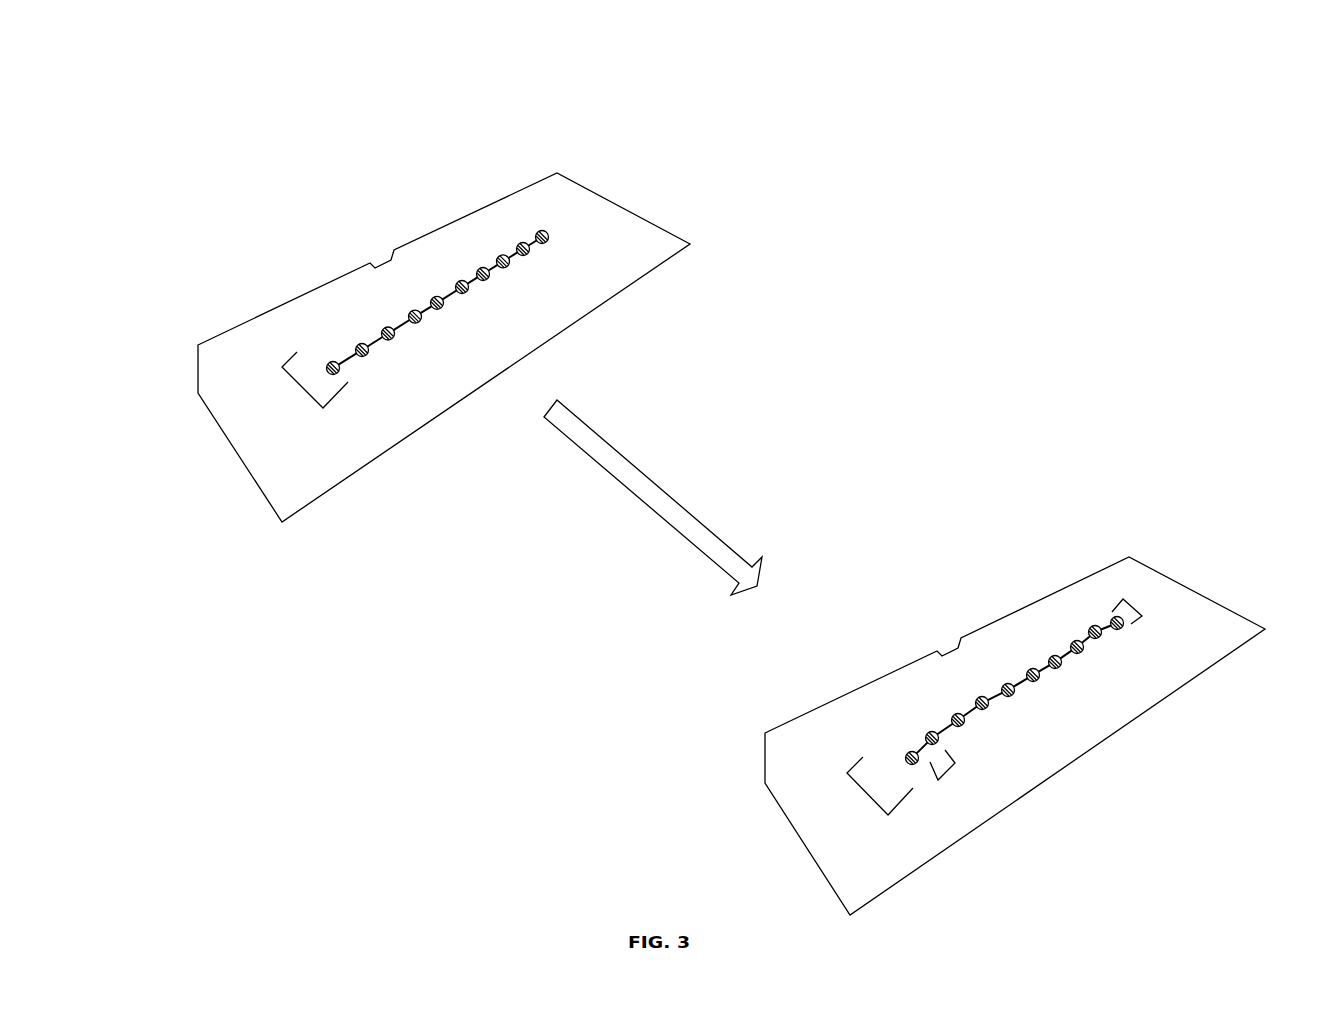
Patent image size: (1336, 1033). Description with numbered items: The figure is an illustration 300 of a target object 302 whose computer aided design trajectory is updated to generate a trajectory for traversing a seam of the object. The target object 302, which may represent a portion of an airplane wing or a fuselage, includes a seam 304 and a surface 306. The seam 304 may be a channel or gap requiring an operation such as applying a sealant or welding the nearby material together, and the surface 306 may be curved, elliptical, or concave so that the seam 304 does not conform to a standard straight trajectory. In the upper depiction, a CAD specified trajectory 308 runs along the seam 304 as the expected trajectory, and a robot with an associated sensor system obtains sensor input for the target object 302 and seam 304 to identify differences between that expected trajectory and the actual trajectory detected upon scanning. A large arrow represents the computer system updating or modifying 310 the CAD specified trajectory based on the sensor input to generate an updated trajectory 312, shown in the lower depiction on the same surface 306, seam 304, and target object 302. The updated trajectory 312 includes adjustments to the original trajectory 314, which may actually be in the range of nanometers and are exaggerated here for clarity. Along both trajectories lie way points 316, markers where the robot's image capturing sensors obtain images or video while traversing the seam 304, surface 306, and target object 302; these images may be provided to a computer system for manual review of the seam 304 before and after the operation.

The trajectory update process 300 is at (171, 60).
The target object 302 is at (477, 210).
The seam 304 is at (863, 793).
The surface 306 is at (255, 378).
The CAD specified trajectory 308 is at (427, 263).
The update or modify 310 is at (630, 590).
The updated trajectory 312 is at (1023, 561).
The adjustments to the original trajectory 314 is at (945, 773).
The way points 316 is at (421, 318).